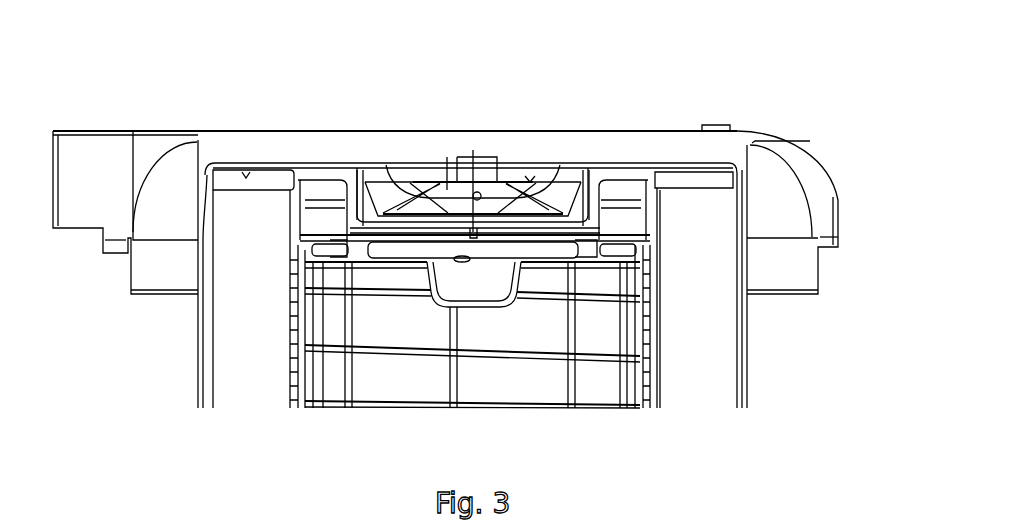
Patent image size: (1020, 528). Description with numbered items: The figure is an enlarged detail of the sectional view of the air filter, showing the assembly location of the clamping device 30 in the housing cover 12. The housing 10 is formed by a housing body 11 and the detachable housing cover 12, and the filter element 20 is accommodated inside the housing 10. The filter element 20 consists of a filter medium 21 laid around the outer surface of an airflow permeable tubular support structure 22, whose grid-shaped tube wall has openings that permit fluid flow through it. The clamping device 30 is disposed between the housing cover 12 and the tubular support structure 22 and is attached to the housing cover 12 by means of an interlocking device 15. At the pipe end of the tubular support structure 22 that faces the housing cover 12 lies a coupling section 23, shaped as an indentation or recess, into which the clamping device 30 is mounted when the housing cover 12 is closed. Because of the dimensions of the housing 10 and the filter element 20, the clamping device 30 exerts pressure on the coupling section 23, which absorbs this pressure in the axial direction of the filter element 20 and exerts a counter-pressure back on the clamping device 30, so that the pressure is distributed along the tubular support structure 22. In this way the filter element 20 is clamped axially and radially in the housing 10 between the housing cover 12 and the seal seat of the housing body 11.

The housing 10 is at (186, 102).
The housing body 11 is at (200, 395).
The housing cover 12 is at (288, 128).
The interlocking device 15 is at (473, 155).
The filter element 20 is at (578, 440).
The filter medium 21 is at (232, 340).
The tubular support structure 22 is at (295, 378).
The coupling section 23 is at (375, 180).
The clamping device 30 is at (503, 165).